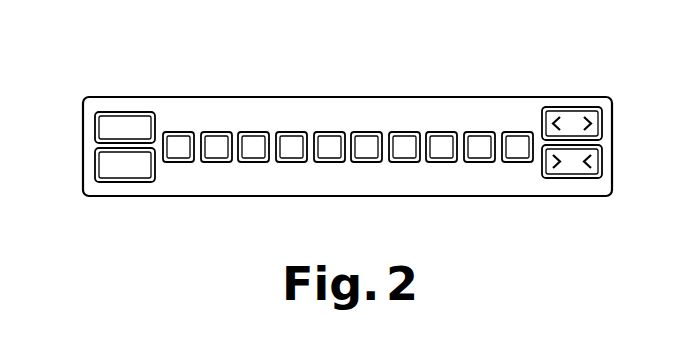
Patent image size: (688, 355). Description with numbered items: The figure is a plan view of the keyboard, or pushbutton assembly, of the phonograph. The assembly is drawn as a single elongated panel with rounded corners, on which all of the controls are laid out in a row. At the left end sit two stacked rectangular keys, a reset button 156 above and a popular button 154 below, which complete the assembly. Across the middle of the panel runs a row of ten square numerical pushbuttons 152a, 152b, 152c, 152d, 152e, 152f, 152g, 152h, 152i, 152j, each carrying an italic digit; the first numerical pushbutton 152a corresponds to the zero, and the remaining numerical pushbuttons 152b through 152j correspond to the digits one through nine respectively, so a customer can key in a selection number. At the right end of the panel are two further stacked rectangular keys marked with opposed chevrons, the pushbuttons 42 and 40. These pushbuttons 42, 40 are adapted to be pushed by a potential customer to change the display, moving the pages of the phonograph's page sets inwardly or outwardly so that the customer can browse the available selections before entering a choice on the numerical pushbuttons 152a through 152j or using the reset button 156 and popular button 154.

The reset button 156 is at (122, 116).
The popular button 154 is at (115, 178).
The numerical pushbutton 152a is at (178, 133).
The numerical pushbutton 152b is at (218, 157).
The numerical pushbutton 152c is at (250, 133).
The numerical pushbutton 152d is at (292, 157).
The numerical pushbutton 152e is at (328, 133).
The numerical pushbutton 152f is at (365, 157).
The numerical pushbutton 152g is at (405, 133).
The numerical pushbutton 152h is at (440, 157).
The numerical pushbutton 152i is at (485, 133).
The numerical pushbutton 152j is at (515, 157).
The pushbutton 42 is at (573, 110).
The pushbutton 40 is at (566, 177).